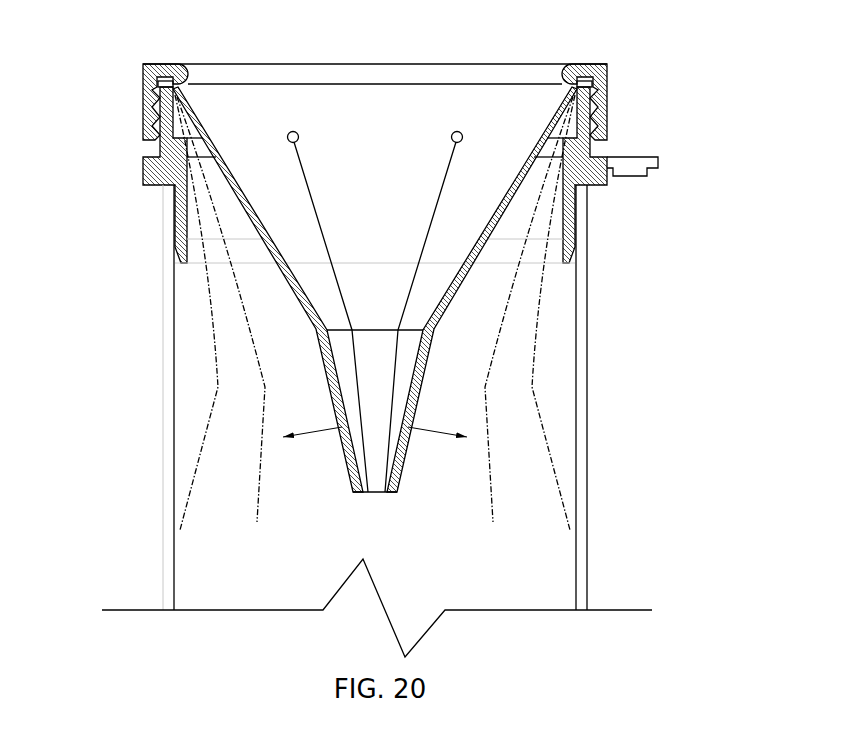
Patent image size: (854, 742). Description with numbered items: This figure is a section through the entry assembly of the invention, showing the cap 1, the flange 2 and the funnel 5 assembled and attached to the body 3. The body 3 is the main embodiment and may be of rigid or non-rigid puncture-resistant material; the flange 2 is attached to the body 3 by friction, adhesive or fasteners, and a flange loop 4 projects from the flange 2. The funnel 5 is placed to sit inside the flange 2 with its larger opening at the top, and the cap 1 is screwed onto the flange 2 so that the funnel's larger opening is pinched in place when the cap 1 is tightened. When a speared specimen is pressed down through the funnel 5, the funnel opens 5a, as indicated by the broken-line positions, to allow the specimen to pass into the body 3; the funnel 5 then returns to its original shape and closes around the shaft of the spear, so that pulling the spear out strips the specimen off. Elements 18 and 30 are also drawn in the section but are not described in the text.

The cap 1 is at (613, 75).
The flange 2 is at (596, 193).
The body 3 is at (586, 243).
The flange loop 4 is at (636, 166).
The funnel 5 is at (493, 110).
The funnel open position 5a is at (265, 388).
The filament with ball end 18 is at (288, 131).
The gasket 30 is at (595, 90).